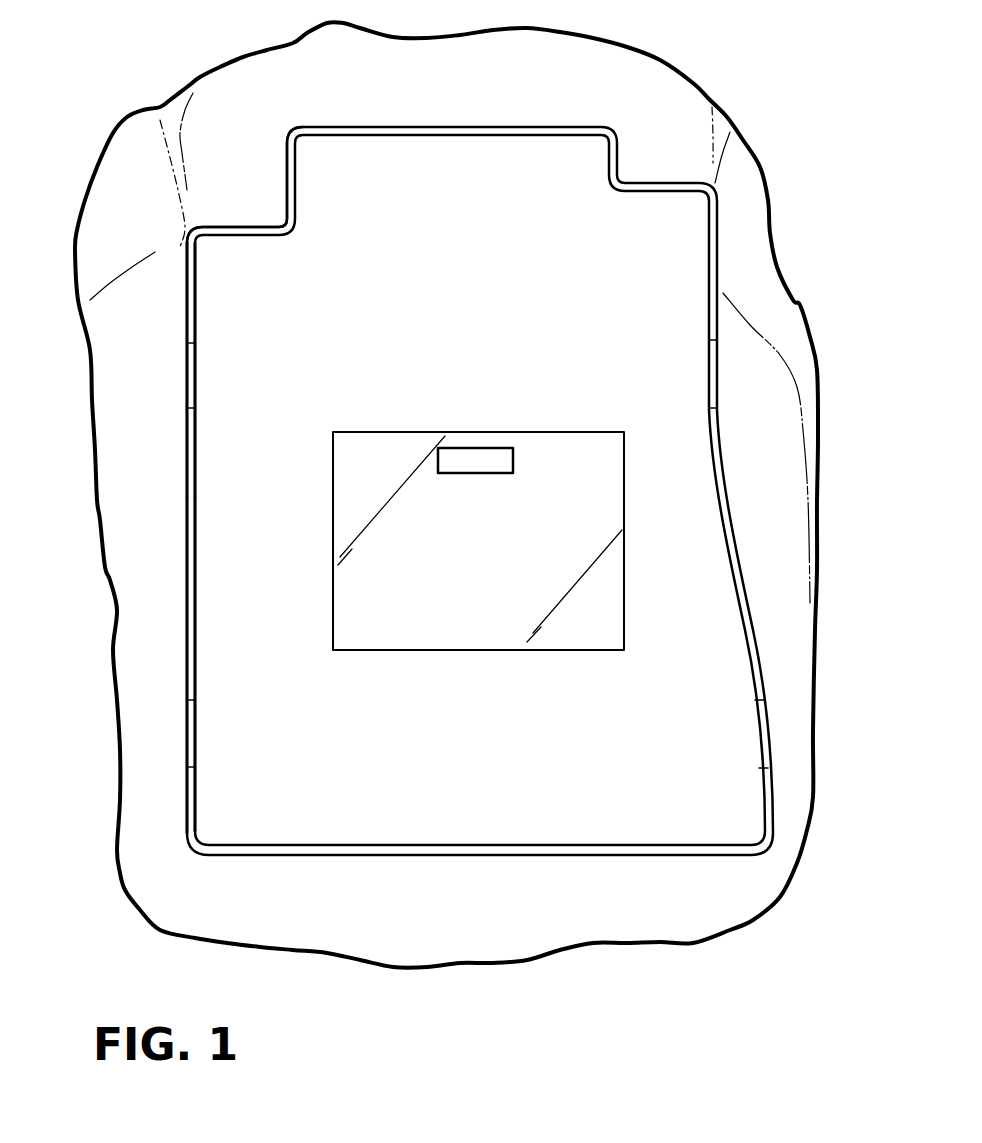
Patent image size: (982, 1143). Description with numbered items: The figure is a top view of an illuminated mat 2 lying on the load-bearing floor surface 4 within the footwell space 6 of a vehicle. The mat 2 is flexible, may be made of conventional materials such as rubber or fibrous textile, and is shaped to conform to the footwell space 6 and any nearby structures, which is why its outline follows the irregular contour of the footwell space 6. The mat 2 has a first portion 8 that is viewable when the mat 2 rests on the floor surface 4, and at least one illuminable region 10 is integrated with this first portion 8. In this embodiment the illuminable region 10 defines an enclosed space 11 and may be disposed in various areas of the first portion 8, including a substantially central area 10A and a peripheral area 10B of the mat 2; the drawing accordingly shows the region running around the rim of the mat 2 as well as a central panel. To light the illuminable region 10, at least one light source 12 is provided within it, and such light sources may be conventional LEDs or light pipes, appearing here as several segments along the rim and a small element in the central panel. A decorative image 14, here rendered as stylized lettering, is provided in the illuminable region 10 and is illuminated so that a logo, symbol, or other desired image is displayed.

The illuminated mat 2 is at (539, 209).
The load-bearing floor surface 4 is at (740, 280).
The footwell space 6 is at (576, 86).
The first portion 8 is at (347, 225).
The illuminable region 10 is at (187, 497).
The substantially central area 10A is at (370, 432).
The peripheral area 10B is at (187, 566).
The enclosed space 11 is at (603, 495).
The light source 12 is at (720, 372).
The decorative image 14 is at (570, 553).